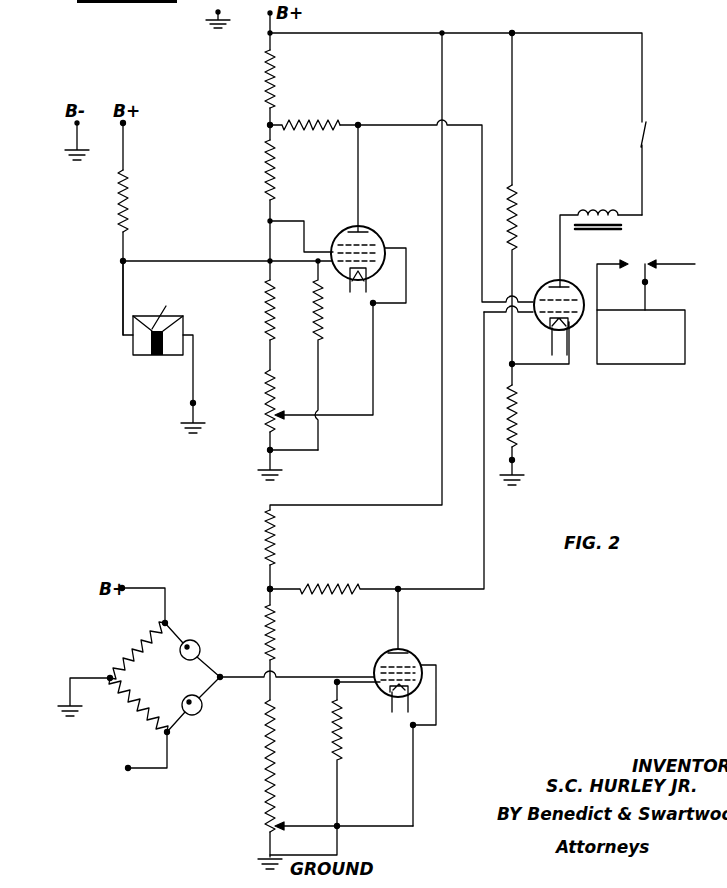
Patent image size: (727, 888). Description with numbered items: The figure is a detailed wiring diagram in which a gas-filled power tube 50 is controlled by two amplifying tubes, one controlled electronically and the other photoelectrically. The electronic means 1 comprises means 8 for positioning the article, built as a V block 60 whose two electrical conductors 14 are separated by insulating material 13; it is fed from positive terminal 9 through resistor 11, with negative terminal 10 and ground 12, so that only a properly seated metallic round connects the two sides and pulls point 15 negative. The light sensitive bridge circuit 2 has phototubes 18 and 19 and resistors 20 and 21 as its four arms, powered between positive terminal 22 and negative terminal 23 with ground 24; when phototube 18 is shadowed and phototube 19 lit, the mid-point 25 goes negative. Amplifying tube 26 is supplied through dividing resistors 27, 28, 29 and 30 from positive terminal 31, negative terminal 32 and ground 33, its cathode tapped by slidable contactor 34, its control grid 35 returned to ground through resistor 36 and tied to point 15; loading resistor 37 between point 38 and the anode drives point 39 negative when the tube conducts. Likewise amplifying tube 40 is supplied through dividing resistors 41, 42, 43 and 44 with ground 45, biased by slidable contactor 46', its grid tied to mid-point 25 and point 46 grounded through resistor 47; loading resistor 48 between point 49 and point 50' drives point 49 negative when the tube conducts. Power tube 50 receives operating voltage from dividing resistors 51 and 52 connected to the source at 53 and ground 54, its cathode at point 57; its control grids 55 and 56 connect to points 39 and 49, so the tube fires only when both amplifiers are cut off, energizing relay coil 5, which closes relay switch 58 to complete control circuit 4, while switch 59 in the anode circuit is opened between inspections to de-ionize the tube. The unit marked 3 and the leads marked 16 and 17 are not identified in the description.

The electronic means 1 is at (92, 211).
The bridge circuit 2 is at (176, 692).
The amplifier unit 3 is at (468, 674).
The control circuit 4 is at (642, 390).
The energy translation means 5 is at (606, 204).
The positioning means 8 is at (162, 320).
The positive terminal 9 is at (125, 124).
The negative terminal 10 is at (76, 127).
The resistor 11 is at (126, 215).
The ground 12 is at (193, 403).
The insulating material 13 is at (166, 310).
The electrical conductors 14 is at (158, 356).
The point 15 is at (125, 262).
The conductor 16 is at (123, 305).
The conductor 17 is at (193, 358).
The phototube 18 is at (198, 648).
The phototube 19 is at (202, 705).
The resistor 20 is at (138, 635).
The resistor 21 is at (128, 725).
The positive terminal 22 is at (122, 588).
The negative terminal 23 is at (128, 771).
The ground 24 is at (110, 678).
The mid-point 25 is at (220, 677).
The amplifying tube 26 is at (376, 240).
The dividing resistor 27 is at (263, 88).
The dividing resistor 28 is at (265, 190).
The dividing resistor 29 is at (266, 330).
The dividing resistor 30 is at (267, 405).
The positive terminal 31 is at (342, 6).
The negative terminal 32 is at (216, 14).
The ground 33 is at (268, 450).
The slidable contactor 34 is at (277, 413).
The control grid 35 is at (345, 290).
The resistor 36 is at (316, 318).
The loading resistor 37 is at (333, 123).
The point 38 is at (268, 125).
The point 39 is at (358, 125).
The amplifying tube 40 is at (412, 655).
The dividing resistor 41 is at (268, 550).
The dividing resistor 42 is at (267, 630).
The dividing resistor 43 is at (263, 755).
The dividing resistor 44 is at (265, 828).
The ground 45 is at (375, 690).
The point 46 is at (334, 699).
The slidable contactor 46' is at (301, 809).
The resistor 47 is at (343, 755).
The loading resistor 48 is at (346, 587).
The point 49 is at (398, 589).
The power tube 50 is at (552, 311).
The point 50' is at (247, 590).
The dividing resistor 51 is at (514, 238).
The dividing resistor 52 is at (514, 420).
The D.C. source connection 53 is at (512, 33).
The ground 54 is at (514, 461).
The control grid 55 is at (546, 284).
The control grid 56 is at (538, 318).
The point 57 is at (515, 366).
The relay switch 58 is at (646, 283).
The switch 59 is at (642, 146).
The V block 60 is at (183, 338).